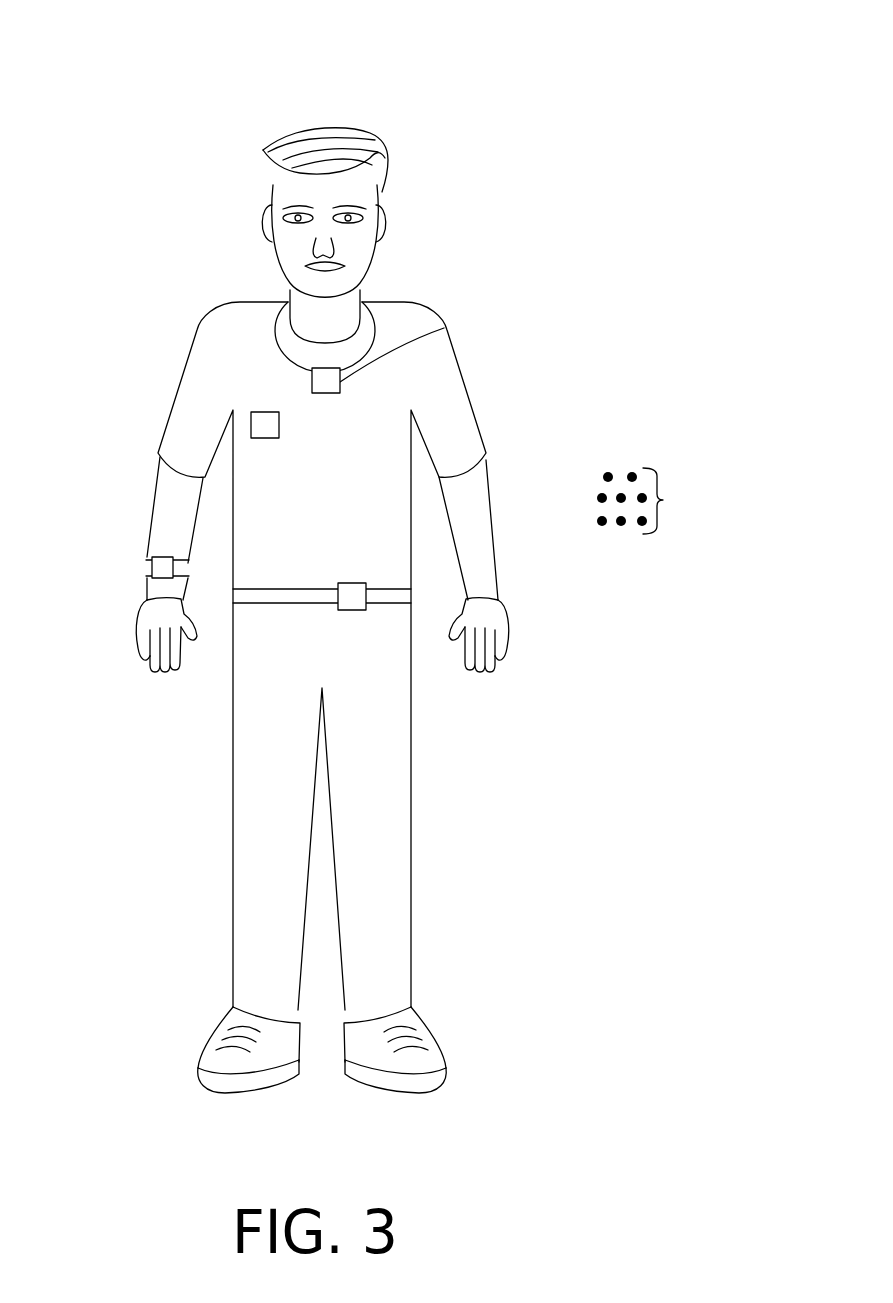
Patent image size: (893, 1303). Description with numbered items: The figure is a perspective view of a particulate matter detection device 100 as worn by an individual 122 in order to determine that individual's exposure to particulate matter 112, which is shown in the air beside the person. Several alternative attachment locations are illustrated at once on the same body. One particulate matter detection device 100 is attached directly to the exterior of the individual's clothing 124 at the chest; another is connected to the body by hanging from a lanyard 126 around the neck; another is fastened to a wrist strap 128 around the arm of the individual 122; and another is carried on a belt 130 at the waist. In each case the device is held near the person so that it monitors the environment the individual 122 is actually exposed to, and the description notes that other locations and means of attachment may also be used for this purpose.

The individual 122 is at (518, 62).
The particulate matter detection device 100 is at (444, 326).
The clothing 124 is at (230, 550).
The lanyard 126 is at (402, 303).
The wrist strap 128 is at (145, 568).
The belt 130 is at (270, 604).
The particulate matter 112 is at (662, 500).